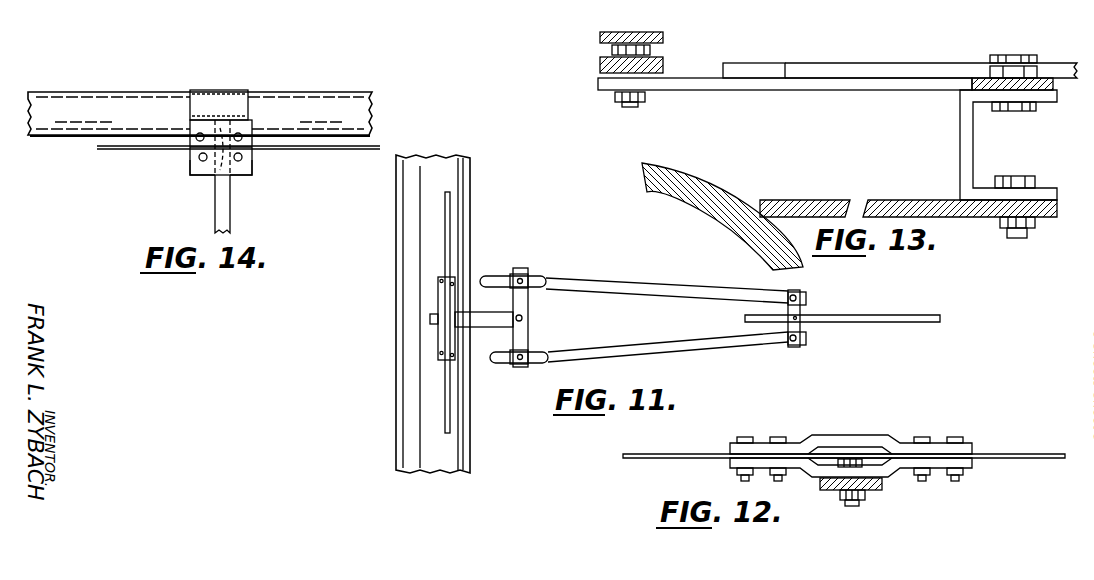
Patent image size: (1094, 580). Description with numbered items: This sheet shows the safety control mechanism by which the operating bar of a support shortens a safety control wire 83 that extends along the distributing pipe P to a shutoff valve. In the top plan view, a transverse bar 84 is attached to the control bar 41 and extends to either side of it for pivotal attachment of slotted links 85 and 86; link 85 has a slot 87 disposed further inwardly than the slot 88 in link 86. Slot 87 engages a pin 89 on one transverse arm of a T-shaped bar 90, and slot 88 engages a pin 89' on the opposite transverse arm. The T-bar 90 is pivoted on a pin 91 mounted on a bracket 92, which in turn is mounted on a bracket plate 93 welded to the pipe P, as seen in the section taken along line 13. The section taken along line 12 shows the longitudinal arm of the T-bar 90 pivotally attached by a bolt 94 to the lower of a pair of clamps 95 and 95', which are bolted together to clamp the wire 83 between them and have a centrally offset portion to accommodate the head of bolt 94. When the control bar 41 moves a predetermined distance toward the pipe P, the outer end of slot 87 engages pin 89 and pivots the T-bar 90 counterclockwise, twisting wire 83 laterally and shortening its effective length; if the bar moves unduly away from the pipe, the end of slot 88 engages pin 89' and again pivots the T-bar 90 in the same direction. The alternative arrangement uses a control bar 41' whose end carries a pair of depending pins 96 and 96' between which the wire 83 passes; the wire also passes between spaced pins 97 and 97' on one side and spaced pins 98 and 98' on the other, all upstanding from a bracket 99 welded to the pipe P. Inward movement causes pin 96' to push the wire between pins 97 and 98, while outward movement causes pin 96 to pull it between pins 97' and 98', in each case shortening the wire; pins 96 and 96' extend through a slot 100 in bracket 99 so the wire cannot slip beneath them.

In FIG. 14, the distributing pipe P is at (107, 92).
In FIG. 11, the distributing pipe P is at (394, 230).
In FIG. 13, the distributing pipe P is at (716, 178).
In FIG. 11, the section line 12— 12 is at (500, 257).
In FIG. 11, the section line 13— 13 is at (425, 323).
In FIG. 11, the control bar 41 is at (842, 332).
In FIG. 14, the control bar 41' is at (204, 176).
In FIG. 14, the safety control wire 83 is at (133, 149).
In FIG. 11, the safety control wire 83 is at (451, 215).
In FIG. 13, the safety control wire 83 is at (630, 50).
In FIG. 12, the safety control wire 83 is at (978, 454).
In FIG. 11, the transverse bar 84 is at (801, 332).
In FIG. 11, the slotted link 85 is at (652, 296).
In FIG. 13, the slotted link 85 is at (934, 63).
In FIG. 11, the slotted link 86 is at (716, 343).
In FIG. 11, the slot 87 is at (501, 277).
In FIG. 13, the slot 87 is at (787, 62).
In FIG. 11, the slot 88 is at (547, 360).
In FIG. 11, the pin 89 is at (537, 271).
In FIG. 13, the pin 89 is at (1013, 51).
In FIG. 11, the pin 89' is at (530, 376).
In FIG. 11, the T-shaped bar 90 is at (519, 303).
In FIG. 13, the T-shaped bar 90 is at (698, 91).
In FIG. 12, the T-shaped bar 90 is at (818, 489).
In FIG. 11, the pin 91 is at (516, 321).
In FIG. 13, the pin 91 is at (1009, 112).
In FIG. 11, the bracket 92 is at (490, 306).
In FIG. 13, the bracket 92 is at (960, 172).
In FIG. 13, the bracket plate 93 is at (874, 200).
In FIG. 13, the bolt 94 is at (643, 107).
In FIG. 12, the bolt 94 is at (861, 504).
In FIG. 13, the clamp 95 is at (651, 58).
In FIG. 12, the clamp 95 is at (851, 473).
In FIG. 11, the clamp 95' is at (430, 325).
In FIG. 13, the clamp 95' is at (655, 26).
In FIG. 12, the clamp 95' is at (851, 427).
In FIG. 14, the depending pin 96 is at (239, 137).
In FIG. 14, the depending pin 96' is at (253, 181).
In FIG. 14, the pin 97 is at (178, 120).
In FIG. 14, the pin 97' is at (177, 166).
In FIG. 14, the pin 98 is at (276, 152).
In FIG. 14, the pin 98' is at (261, 166).
In FIG. 14, the bracket 99 is at (192, 174).
In FIG. 14, the slot 100 is at (228, 112).